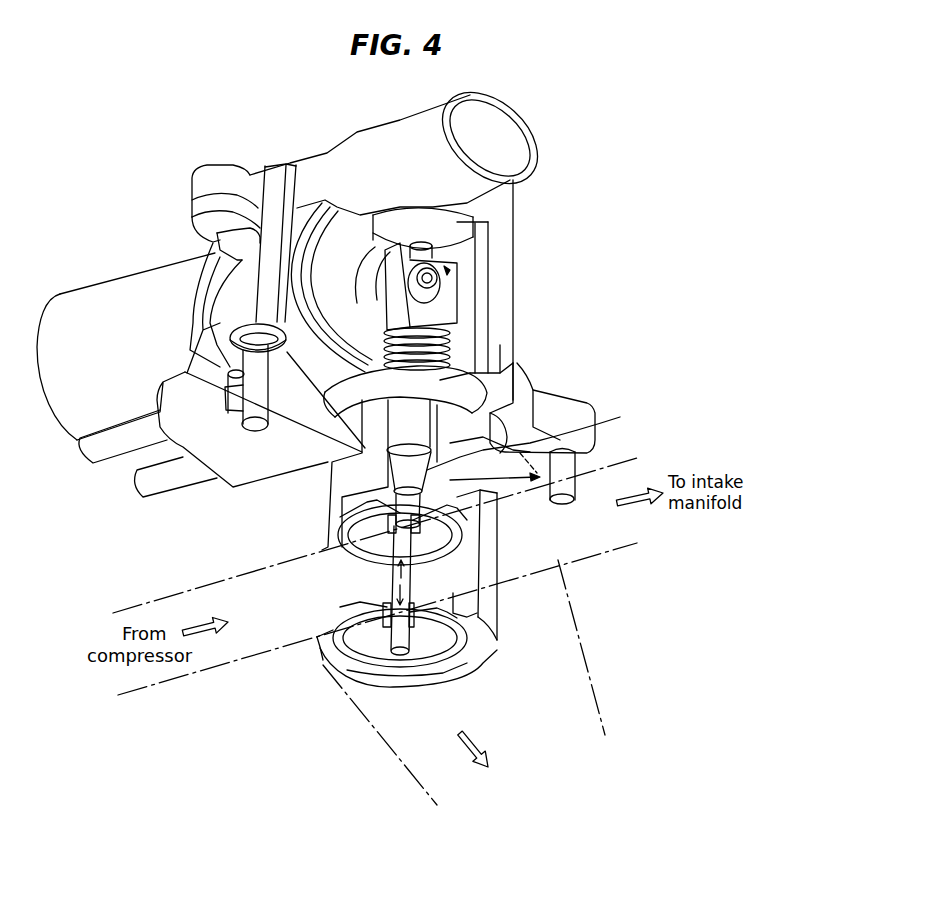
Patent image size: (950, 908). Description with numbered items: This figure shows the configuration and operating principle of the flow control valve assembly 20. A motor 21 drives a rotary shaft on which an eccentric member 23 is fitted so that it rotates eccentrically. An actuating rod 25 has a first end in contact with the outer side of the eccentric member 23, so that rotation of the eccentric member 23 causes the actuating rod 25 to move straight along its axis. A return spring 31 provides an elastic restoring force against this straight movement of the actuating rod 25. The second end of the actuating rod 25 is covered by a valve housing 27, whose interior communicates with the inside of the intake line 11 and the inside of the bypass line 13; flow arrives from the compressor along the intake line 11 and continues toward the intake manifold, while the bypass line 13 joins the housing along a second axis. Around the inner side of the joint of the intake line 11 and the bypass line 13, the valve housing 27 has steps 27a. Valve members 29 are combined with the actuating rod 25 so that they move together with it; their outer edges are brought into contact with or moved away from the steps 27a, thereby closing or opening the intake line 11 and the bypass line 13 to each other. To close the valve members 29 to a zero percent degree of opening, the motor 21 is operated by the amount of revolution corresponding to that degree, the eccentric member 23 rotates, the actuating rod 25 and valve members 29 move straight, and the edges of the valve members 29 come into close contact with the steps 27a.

The intake line 11 is at (617, 552).
The bypass line 13 is at (410, 773).
The flow control valve assembly 20 is at (553, 198).
The motor 21 is at (100, 303).
The eccentric member 23 is at (435, 278).
The actuating rod 25 is at (563, 442).
The valve housing 27 is at (485, 650).
The steps 27a is at (465, 535).
The valve members 29 is at (345, 553).
The return spring 31 is at (447, 338).